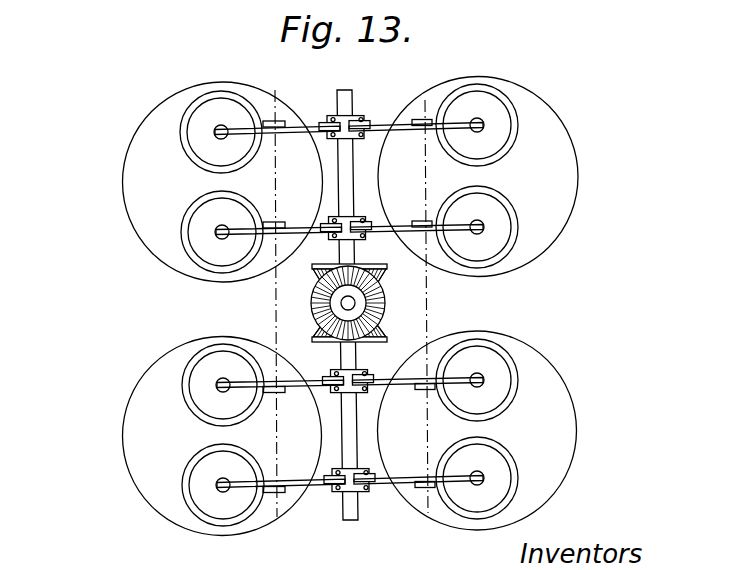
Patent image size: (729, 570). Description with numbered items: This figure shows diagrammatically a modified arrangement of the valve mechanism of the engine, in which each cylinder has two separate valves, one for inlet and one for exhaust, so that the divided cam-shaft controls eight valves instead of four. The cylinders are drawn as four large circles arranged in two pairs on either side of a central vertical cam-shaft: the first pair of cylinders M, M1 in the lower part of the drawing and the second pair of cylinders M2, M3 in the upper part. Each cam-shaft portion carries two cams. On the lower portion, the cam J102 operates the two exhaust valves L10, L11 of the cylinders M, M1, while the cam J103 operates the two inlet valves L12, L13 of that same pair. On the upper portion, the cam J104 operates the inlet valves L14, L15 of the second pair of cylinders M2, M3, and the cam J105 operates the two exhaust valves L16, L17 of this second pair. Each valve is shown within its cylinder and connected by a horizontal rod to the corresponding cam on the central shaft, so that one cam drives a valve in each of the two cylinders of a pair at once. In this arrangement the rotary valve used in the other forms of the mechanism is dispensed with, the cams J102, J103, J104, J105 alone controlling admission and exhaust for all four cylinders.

The cam J105 is at (353, 112).
The cam J104 is at (340, 238).
The cam J103 is at (360, 375).
The cam J102 is at (353, 488).
The cylinder M2 is at (155, 146).
The cylinder M3 is at (556, 168).
The cylinder M is at (175, 447).
The cylinder M1 is at (537, 423).
The exhaust valve L16 is at (215, 107).
The exhaust valve L17 is at (490, 113).
The inlet valve L14 is at (205, 222).
The inlet valve L15 is at (497, 227).
The inlet valve L12 is at (197, 388).
The inlet valve L13 is at (490, 370).
The exhaust valve L10 is at (202, 487).
The exhaust valve L11 is at (500, 485).